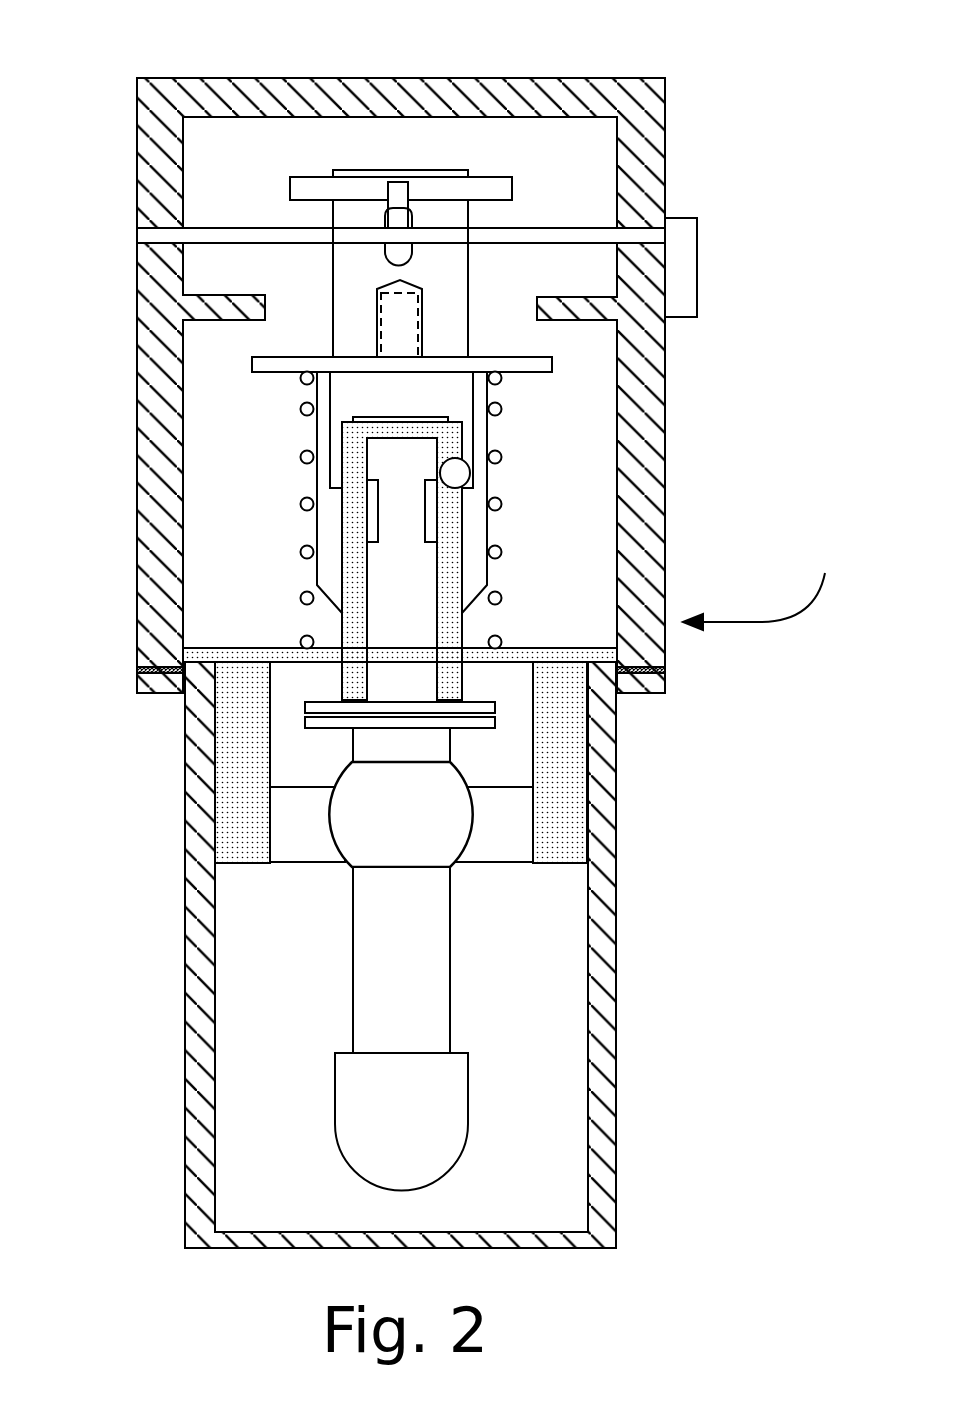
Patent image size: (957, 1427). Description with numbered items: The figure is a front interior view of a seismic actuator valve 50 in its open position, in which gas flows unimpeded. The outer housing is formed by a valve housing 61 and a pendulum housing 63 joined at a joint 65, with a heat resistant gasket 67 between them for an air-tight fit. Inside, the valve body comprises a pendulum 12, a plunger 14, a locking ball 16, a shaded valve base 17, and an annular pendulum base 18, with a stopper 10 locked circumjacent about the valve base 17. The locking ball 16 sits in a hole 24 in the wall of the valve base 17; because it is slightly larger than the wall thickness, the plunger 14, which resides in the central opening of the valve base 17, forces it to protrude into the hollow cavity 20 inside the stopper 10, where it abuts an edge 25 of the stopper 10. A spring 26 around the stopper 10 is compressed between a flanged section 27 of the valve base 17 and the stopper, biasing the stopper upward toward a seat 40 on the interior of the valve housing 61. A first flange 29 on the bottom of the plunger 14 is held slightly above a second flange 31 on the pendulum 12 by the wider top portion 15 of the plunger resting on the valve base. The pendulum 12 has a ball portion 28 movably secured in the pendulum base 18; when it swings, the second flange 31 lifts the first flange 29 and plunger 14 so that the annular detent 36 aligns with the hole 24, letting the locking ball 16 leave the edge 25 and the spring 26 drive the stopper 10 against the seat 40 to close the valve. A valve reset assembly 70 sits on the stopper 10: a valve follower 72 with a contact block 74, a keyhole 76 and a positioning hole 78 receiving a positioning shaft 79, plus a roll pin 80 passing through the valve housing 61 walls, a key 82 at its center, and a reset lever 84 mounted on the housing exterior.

The stopper 10 is at (523, 368).
The pendulum 12 is at (437, 968).
The plunger 14 is at (380, 605).
The top portion 15 is at (410, 415).
The locking ball 16 is at (463, 477).
The valve base 17 is at (568, 747).
The pendulum base 18 is at (505, 840).
The hollow cavity 20 is at (335, 455).
The hole 24 is at (460, 507).
The edge 25 is at (460, 493).
The spring 26 is at (302, 405).
The flanged section 27 is at (215, 645).
The ball portion 28 is at (370, 833).
The first flange 29 is at (337, 700).
The second flange 31 is at (337, 730).
The annular detent 36 is at (373, 530).
The seat 40 is at (245, 297).
The valve 50 is at (770, 595).
The valve housing 61 is at (140, 520).
The pendulum housing 63 is at (185, 920).
The joint 65 is at (160, 668).
The heat resistant gasket 67 is at (150, 672).
The valve reset assembly 70 is at (470, 300).
The valve follower 72 is at (340, 257).
The contact block 74 is at (307, 195).
The keyhole 76 is at (401, 255).
The positioning hole 78 is at (420, 283).
The positioning shaft 79 is at (392, 308).
The roll pin 80 is at (203, 235).
The key 82 is at (401, 200).
The reset lever 84 is at (693, 277).